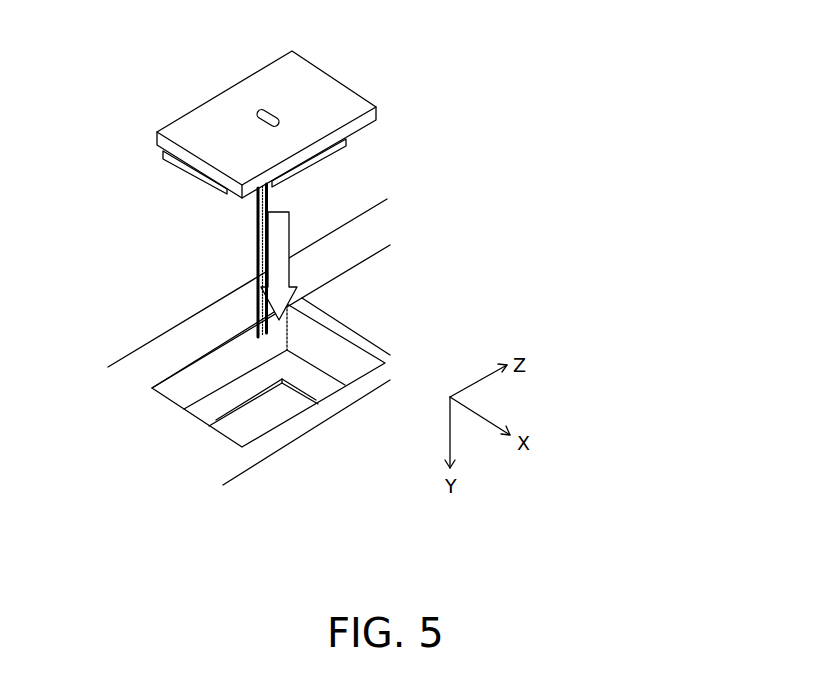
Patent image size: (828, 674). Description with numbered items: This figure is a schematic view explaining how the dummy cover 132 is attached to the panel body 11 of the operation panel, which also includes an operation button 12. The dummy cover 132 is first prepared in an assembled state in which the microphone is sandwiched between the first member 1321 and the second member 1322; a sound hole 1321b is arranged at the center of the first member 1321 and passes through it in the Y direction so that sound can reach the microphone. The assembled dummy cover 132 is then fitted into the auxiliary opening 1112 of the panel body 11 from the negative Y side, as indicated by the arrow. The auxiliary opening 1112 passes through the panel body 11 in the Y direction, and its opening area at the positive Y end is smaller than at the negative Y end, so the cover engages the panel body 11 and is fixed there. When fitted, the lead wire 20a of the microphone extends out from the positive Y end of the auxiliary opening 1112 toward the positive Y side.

The panel body 11 is at (167, 342).
The operation button 12 is at (355, 292).
The auxiliary opening 1112 is at (183, 391).
The lead wire 20a is at (256, 233).
The dummy cover 132 is at (285, 113).
The first member 1321 is at (347, 95).
The sound hole 1321b is at (257, 112).
The second member 1322 is at (187, 173).